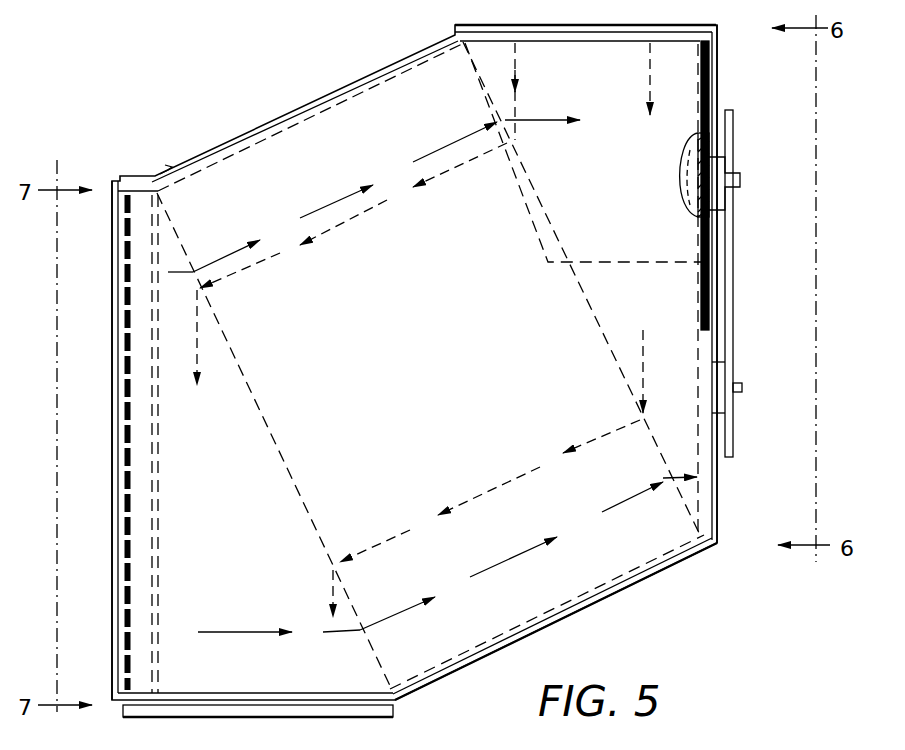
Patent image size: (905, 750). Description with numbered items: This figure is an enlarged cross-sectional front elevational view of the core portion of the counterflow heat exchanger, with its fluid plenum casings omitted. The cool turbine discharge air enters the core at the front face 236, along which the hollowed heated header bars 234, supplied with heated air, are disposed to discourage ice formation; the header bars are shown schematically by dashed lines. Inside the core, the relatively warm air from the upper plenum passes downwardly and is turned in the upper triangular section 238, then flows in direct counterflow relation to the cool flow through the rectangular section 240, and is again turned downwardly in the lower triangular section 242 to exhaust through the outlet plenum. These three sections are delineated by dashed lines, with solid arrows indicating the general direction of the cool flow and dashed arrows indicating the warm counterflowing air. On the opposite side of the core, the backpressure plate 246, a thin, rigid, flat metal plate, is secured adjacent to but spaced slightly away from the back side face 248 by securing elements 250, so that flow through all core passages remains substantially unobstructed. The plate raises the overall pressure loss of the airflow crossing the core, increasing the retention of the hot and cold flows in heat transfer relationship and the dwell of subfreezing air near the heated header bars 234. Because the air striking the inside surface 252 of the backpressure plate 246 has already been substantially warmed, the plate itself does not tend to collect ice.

The heated header bars 234 is at (130, 435).
The front face 236 is at (100, 383).
The triangular section 238 is at (593, 103).
The rectangular section 240 is at (447, 448).
The triangular section 242 is at (251, 576).
The backpressure plate 246 is at (737, 356).
The back side face 248 is at (724, 519).
The securing elements 250 is at (722, 170).
The inside surface 252 is at (723, 270).